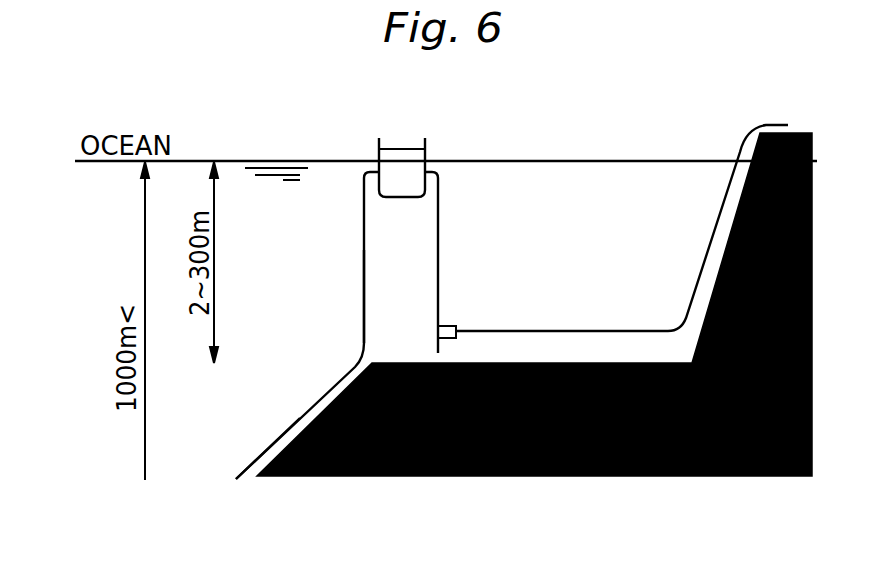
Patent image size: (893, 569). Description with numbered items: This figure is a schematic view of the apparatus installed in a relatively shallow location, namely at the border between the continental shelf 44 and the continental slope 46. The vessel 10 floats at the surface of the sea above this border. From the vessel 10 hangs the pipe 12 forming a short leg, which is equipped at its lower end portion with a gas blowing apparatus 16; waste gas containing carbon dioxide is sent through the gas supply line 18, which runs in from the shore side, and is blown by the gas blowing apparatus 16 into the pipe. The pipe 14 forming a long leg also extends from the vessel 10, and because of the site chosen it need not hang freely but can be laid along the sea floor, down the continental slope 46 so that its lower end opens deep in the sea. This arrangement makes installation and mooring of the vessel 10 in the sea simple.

The vessel 10 is at (408, 160).
The pipe forming a short leg 12 is at (440, 222).
The pipe forming a long leg 14 is at (364, 264).
The gas blowing apparatus 16 is at (453, 326).
The gas supply line 18 is at (582, 331).
The continental shelf 44 is at (518, 477).
The continental slope 46 is at (310, 427).